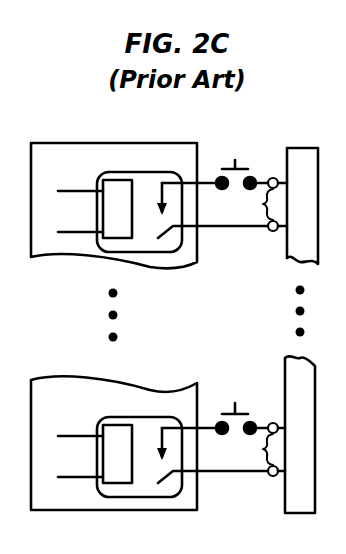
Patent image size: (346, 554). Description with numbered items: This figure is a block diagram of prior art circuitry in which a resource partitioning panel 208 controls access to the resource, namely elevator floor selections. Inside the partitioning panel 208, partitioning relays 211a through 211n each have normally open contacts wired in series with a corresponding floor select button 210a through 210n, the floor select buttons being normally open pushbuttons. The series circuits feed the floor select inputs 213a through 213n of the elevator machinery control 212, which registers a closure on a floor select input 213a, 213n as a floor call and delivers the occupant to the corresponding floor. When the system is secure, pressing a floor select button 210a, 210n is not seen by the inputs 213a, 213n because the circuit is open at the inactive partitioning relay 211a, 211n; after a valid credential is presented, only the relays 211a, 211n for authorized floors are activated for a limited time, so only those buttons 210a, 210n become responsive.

The resource partitioning panel 208 is at (50, 136).
The partitioning relay 211a is at (124, 168).
The floor select button 210a is at (234, 151).
The floor select input 213a is at (247, 204).
The elevator machinery control 212 is at (302, 143).
The partitioning relay 211n is at (154, 412).
The floor select button 210n is at (234, 396).
The floor select input 213n is at (246, 449).